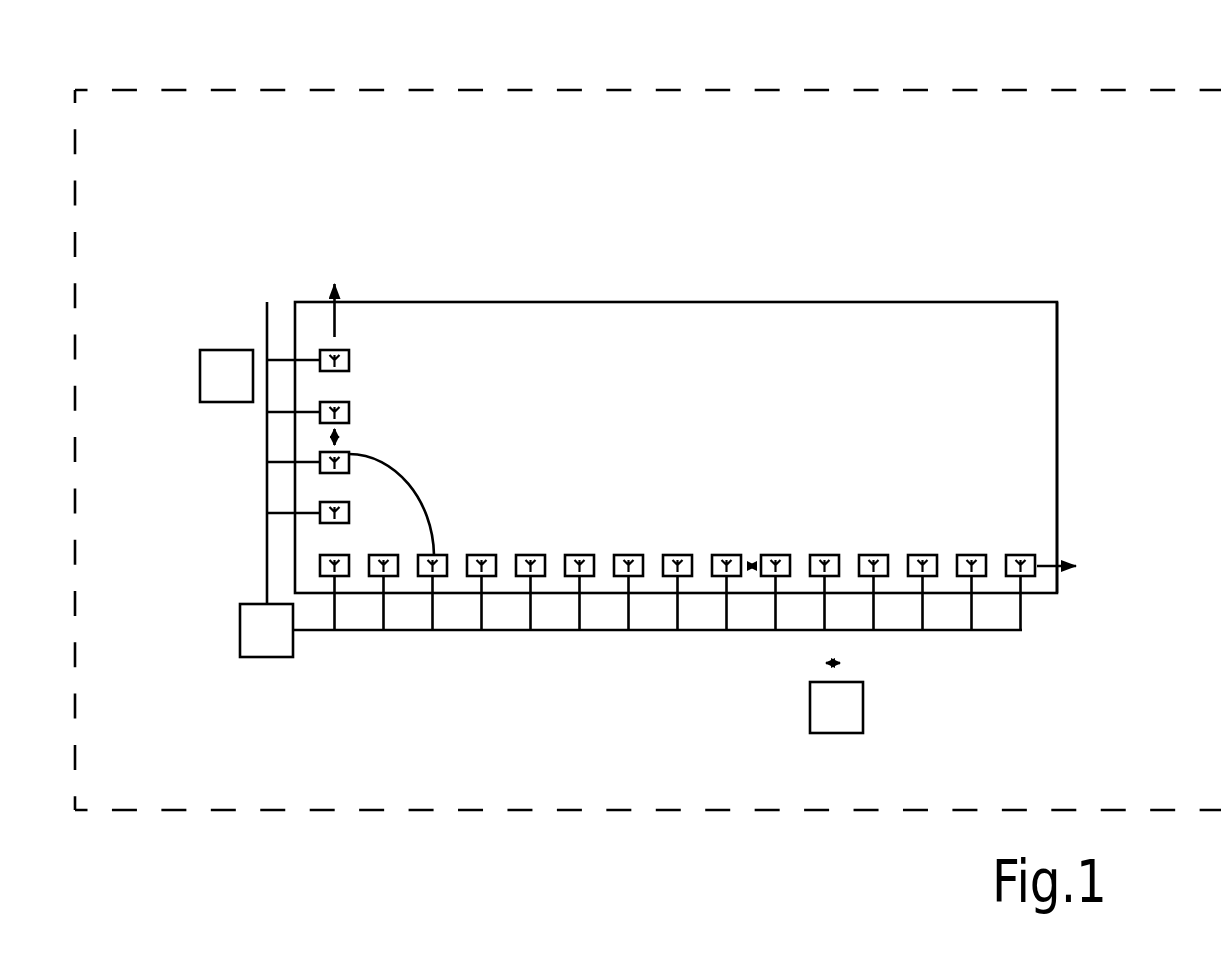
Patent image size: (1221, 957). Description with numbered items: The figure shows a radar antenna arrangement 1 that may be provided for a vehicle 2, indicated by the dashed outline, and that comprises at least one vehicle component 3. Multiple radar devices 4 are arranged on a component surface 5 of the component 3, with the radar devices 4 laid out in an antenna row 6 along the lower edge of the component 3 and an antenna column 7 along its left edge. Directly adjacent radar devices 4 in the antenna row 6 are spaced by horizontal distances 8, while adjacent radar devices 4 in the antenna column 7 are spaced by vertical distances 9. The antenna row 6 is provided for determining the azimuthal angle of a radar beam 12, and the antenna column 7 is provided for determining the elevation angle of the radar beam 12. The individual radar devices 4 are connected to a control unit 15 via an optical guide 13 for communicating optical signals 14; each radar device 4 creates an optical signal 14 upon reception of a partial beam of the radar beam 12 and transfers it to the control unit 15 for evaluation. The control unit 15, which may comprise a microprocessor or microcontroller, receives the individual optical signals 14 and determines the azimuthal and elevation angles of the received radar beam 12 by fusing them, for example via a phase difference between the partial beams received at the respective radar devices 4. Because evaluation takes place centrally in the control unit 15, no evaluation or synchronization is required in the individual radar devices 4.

The radar antenna arrangement 1 is at (277, 240).
The vehicle 2 is at (240, 81).
The vehicle component 3 is at (495, 340).
The radar device 4 is at (454, 590).
The component surface 5 is at (1077, 498).
The antenna row 6 is at (1063, 572).
The antenna column 7 is at (341, 296).
The horizontal distance 8 is at (752, 555).
The vertical distance 9 is at (345, 440).
The radar beam 12 is at (836, 698).
The optical guide 13 is at (262, 474).
The optical signal 14 is at (226, 376).
The control unit 15 is at (265, 659).